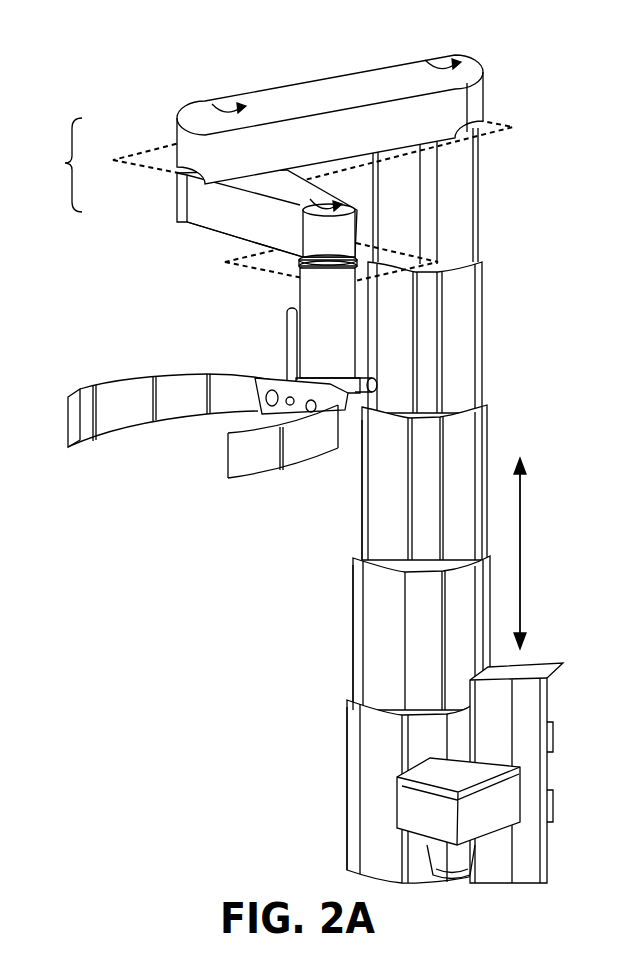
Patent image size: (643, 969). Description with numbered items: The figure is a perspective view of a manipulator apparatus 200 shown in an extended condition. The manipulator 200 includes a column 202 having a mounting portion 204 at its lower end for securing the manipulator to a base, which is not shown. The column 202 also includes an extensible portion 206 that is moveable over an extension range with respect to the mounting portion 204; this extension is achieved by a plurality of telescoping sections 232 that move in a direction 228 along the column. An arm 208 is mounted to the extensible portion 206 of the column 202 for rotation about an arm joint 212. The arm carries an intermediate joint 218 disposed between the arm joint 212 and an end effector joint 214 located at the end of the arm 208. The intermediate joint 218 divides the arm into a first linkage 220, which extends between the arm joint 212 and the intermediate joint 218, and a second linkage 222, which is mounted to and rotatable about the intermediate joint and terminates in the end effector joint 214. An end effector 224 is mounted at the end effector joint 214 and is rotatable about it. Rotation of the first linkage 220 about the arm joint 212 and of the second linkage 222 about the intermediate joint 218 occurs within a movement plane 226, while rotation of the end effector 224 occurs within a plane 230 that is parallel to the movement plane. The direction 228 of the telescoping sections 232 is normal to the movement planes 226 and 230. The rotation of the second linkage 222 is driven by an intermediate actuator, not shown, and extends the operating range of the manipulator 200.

The manipulator apparatus 200 is at (94, 78).
The column 202 is at (487, 421).
The mounting portion 204 is at (552, 692).
The extensible portion 206 is at (482, 127).
The arm 208 is at (53, 165).
The arm joint 212 is at (446, 66).
The end effector joint 214 is at (306, 202).
The intermediate joint 218 is at (232, 110).
The first linkage 220 is at (198, 127).
The second linkage 222 is at (200, 203).
The end effector 224 is at (191, 436).
The movement plane 226 is at (231, 188).
The direction 228 is at (521, 537).
The plane 230 is at (252, 270).
The telescoping sections 232 is at (347, 712).